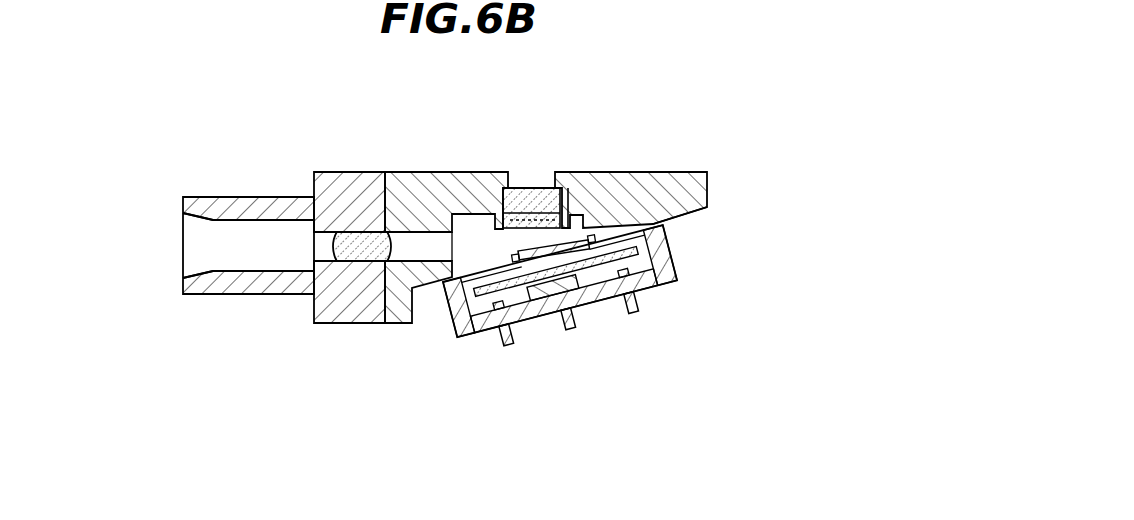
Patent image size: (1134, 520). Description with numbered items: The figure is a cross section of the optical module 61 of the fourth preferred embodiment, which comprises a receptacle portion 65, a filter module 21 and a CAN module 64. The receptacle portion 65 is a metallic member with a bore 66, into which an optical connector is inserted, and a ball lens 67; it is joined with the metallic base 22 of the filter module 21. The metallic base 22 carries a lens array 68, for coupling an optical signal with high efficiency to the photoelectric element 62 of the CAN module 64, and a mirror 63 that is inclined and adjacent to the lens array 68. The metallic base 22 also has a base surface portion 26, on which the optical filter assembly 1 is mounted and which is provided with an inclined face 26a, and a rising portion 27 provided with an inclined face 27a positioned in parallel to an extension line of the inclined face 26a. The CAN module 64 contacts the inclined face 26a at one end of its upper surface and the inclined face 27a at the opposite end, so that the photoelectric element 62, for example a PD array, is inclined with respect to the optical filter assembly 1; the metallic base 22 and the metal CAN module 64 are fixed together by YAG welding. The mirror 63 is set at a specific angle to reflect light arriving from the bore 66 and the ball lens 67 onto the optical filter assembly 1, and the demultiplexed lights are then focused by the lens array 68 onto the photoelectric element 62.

The optical module 61 is at (194, 156).
The receptacle portion 65 is at (266, 193).
The bore 66 is at (237, 260).
The ball lens 67 is at (336, 258).
The filter module 21 is at (662, 168).
The metallic base 22 is at (448, 173).
The base surface portion 26 is at (617, 173).
The inclined face 26a is at (668, 224).
The rising portion 27 is at (399, 315).
The inclined face 27a is at (424, 288).
The optical filter assembly 1 is at (572, 173).
The CAN module 64 is at (674, 268).
The lens array 68 is at (655, 229).
The mirror 63 is at (528, 280).
The photoelectric element 62 is at (590, 296).